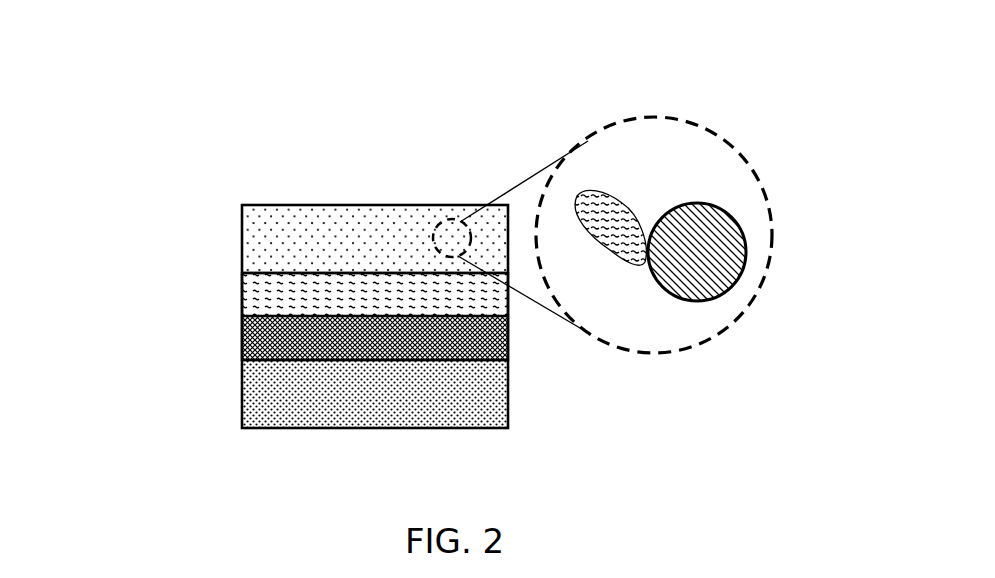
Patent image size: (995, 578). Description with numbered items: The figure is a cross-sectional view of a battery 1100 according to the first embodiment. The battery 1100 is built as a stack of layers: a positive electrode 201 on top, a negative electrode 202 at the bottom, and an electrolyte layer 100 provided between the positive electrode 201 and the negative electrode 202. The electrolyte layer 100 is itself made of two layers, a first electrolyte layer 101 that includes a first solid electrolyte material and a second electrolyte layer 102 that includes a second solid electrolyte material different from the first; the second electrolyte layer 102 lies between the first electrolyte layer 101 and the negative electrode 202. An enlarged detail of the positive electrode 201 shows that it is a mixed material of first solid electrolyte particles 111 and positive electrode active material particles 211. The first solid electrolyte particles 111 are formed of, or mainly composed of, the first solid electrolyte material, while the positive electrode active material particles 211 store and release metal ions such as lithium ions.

The battery 1100 is at (412, 157).
The electrolyte layer 100 is at (108, 383).
The first electrolyte layer 101 is at (273, 292).
The second electrolyte layer 102 is at (273, 337).
The positive electrode 201 is at (277, 226).
The negative electrode 202 is at (273, 395).
The first solid electrolyte particles 111 is at (717, 253).
The positive electrode active material particles 211 is at (623, 247).